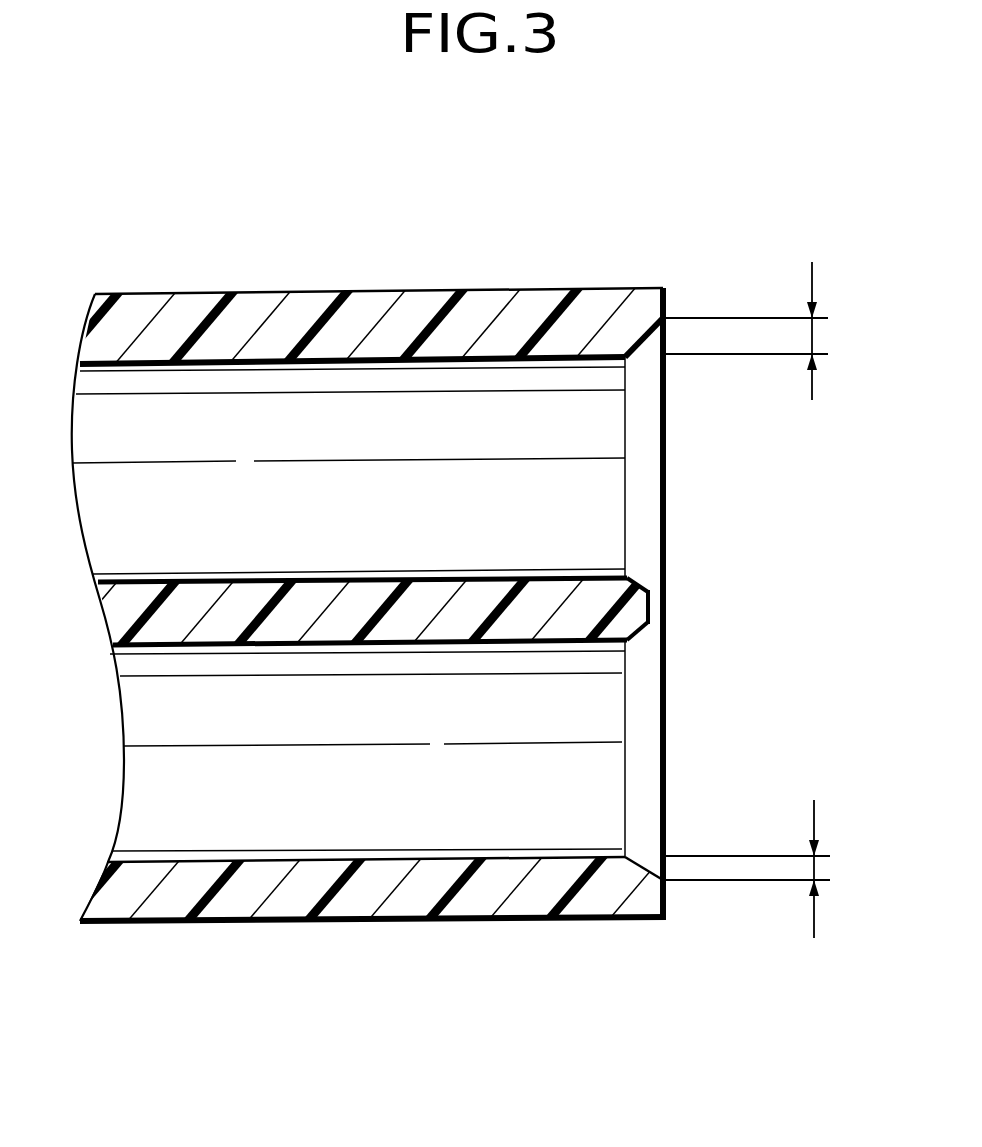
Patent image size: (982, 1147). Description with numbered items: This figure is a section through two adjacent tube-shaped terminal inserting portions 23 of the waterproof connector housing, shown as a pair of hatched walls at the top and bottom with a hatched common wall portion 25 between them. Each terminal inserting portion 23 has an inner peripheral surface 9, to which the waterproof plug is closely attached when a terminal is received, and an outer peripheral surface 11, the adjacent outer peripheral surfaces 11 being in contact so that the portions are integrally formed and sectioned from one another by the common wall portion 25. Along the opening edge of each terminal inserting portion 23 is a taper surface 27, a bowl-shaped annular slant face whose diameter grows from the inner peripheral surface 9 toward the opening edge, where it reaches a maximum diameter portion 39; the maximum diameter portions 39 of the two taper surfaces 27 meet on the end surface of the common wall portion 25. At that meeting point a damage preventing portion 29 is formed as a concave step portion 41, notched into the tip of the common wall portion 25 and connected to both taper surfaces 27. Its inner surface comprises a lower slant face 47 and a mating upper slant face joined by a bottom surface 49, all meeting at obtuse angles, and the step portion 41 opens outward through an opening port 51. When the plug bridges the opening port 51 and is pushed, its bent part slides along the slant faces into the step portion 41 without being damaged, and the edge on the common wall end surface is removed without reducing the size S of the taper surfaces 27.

The inner peripheral surface 9 is at (384, 370).
The outer peripheral surface 11 is at (158, 312).
The terminal inserting portion 23 is at (279, 264).
The common wall portion 25 is at (347, 645).
The taper surface 27 is at (637, 414).
The damage preventing portion 29 is at (698, 566).
The maximum diameter portion 39 is at (663, 432).
The step portion 41 is at (655, 625).
The lower slant face 47 is at (665, 632).
The bottom surface 49 is at (663, 591).
The opening port 51 is at (663, 605).
The size of the taper surfaces S is at (764, 600).